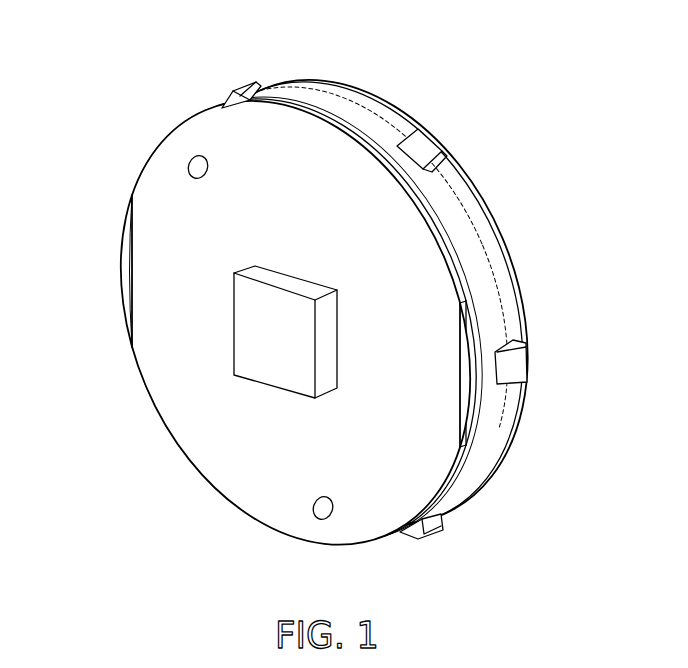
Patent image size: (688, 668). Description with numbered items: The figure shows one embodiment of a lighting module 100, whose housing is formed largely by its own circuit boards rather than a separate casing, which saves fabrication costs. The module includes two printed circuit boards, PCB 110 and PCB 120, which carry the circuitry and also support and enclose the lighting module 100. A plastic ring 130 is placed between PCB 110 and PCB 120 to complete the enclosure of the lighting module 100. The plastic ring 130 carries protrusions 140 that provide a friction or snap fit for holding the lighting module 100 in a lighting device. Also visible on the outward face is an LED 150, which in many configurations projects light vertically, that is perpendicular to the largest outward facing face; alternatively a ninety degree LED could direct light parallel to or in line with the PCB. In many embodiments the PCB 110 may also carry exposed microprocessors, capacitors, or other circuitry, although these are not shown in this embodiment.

The lighting module 100 is at (320, 309).
The PCB 110 is at (408, 246).
The PCB 120 is at (460, 157).
The plastic ring 130 is at (353, 102).
The protrusions 140 is at (240, 87).
The LED 150 is at (240, 372).